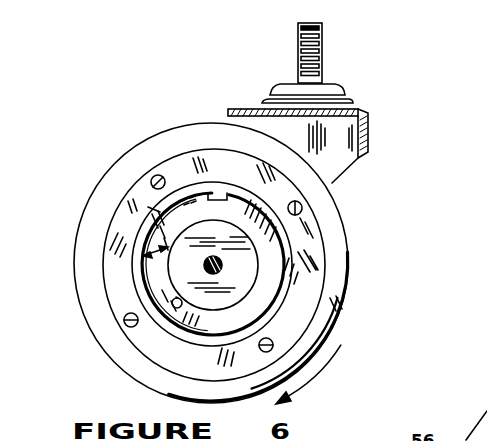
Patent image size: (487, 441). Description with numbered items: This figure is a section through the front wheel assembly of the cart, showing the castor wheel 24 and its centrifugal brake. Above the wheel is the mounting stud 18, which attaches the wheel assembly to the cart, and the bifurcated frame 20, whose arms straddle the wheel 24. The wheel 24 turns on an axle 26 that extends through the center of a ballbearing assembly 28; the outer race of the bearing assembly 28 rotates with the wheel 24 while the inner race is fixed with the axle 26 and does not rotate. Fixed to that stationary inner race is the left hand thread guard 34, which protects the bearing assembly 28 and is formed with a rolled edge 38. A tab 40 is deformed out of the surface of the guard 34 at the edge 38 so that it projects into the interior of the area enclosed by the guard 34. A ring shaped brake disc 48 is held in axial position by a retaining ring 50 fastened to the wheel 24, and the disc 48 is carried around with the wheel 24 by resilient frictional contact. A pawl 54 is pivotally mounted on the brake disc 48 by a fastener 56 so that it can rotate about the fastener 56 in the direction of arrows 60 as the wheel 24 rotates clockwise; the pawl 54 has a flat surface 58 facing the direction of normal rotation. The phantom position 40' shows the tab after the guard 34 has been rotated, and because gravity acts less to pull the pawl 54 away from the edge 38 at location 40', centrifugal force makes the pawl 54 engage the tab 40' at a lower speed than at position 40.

The mounting stud 18 is at (325, 65).
The bifurcated frame 20 is at (334, 162).
The castor wheel 24 is at (105, 203).
The axle 26 is at (222, 273).
The ballbearing assembly 28 is at (244, 264).
The left hand thread guard 34 is at (152, 214).
The rolled edge 38 is at (233, 337).
The tab 40 is at (187, 122).
The tab in alternate position 40' is at (130, 151).
The brake disc 48 is at (255, 288).
The retaining ring 50 is at (313, 252).
The pawl 54 is at (172, 304).
The fastener 56 is at (174, 307).
The flat surface 58 is at (110, 173).
The arrows 60 is at (128, 274).